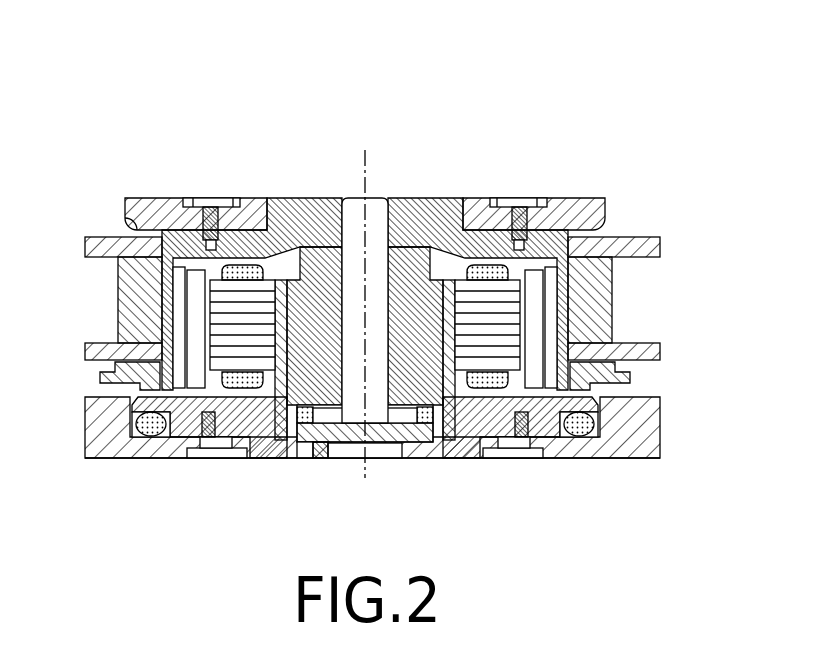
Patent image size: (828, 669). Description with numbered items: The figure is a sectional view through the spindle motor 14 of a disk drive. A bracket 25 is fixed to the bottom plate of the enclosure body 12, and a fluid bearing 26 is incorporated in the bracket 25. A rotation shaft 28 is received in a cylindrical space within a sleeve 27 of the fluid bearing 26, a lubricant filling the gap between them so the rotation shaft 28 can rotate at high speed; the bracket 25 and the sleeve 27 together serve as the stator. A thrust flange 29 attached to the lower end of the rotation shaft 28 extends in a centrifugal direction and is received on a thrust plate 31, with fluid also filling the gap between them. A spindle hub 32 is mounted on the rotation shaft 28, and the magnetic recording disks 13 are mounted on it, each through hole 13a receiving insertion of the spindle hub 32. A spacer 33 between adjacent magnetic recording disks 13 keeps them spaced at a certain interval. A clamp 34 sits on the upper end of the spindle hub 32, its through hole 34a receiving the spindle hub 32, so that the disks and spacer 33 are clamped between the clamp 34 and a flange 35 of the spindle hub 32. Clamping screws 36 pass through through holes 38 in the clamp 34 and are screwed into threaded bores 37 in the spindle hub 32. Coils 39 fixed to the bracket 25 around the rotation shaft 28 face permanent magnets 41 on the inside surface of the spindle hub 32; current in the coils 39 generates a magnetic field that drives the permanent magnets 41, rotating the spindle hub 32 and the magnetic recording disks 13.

The enclosure body 12 is at (137, 458).
The magnetic recording disk 13 is at (648, 238).
The through hole 13a is at (611, 272).
The spindle motor 14 is at (272, 152).
The bracket 25 is at (260, 459).
The fluid bearing 26 is at (314, 441).
The sleeve 27 is at (408, 248).
The rotation shaft 28 is at (375, 198).
The thrust flange 29 is at (409, 426).
The thrust plate 31 is at (378, 442).
The spindle hub 32 is at (317, 190).
The spacer 33 is at (117, 303).
The clamp 34 is at (127, 214).
The through hole 34a is at (452, 200).
The flange 35 is at (100, 380).
The clamping screw 36 is at (208, 200).
The threaded bore 37 is at (192, 200).
The through hole 38 is at (217, 200).
The coil 39 is at (207, 449).
The permanent magnet 41 is at (133, 200).